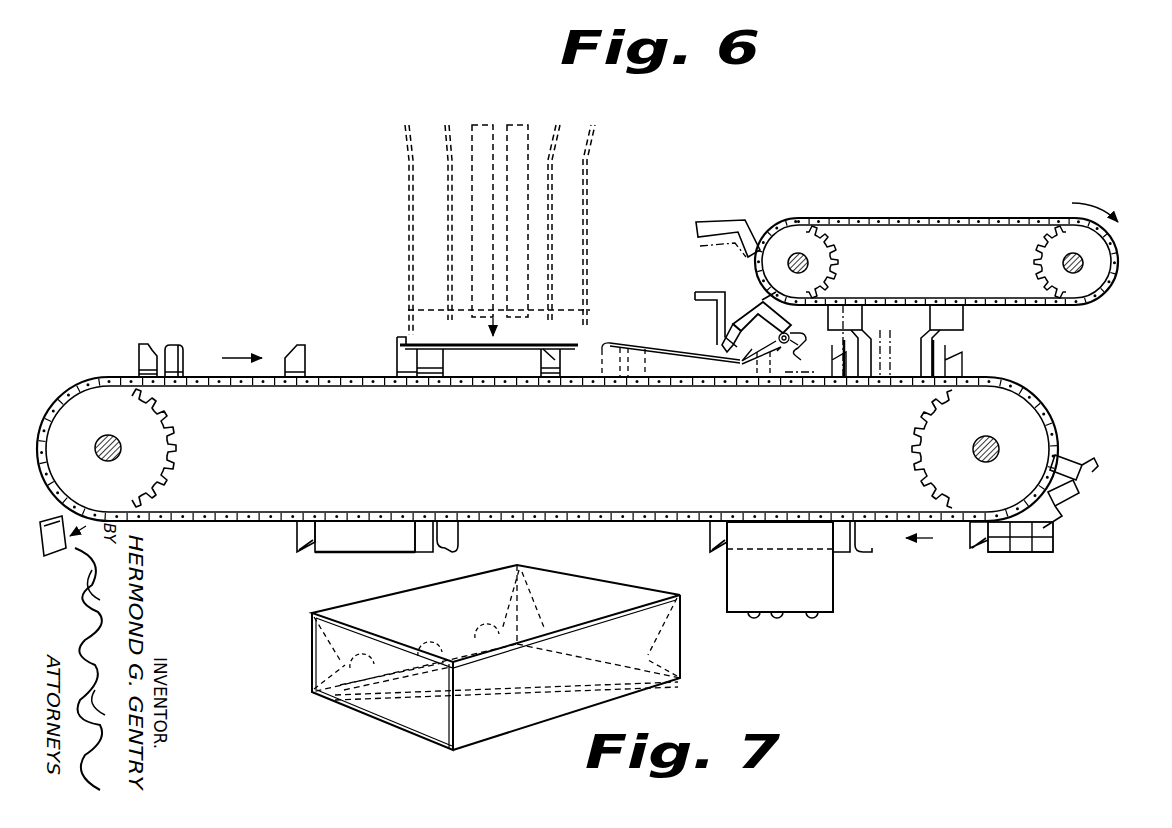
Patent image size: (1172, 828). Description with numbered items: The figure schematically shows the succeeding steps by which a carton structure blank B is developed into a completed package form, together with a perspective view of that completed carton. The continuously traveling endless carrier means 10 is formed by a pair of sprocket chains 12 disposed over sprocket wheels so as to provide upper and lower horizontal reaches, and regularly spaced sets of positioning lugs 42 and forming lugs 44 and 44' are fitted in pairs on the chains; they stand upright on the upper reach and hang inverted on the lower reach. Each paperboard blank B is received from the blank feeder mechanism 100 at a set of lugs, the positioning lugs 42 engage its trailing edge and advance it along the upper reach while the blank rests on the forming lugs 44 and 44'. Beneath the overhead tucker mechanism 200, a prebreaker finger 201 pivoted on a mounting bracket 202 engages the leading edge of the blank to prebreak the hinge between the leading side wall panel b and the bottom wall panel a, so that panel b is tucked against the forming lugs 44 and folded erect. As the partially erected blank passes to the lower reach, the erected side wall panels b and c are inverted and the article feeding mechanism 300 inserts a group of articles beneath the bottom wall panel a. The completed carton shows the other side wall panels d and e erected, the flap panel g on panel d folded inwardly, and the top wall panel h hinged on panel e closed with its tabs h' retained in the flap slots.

In FIG. 6, the carrier means 10 is at (547, 414).
In FIG. 6, the sprocket chains 12 is at (236, 388).
In FIG. 6, the positioning lugs 42 is at (142, 344).
In FIG. 6, the forming lugs 44' is at (180, 342).
In FIG. 6, the forming lugs 44 is at (300, 342).
In FIG. 6, the blank feeder mechanism 100 is at (406, 207).
In FIG. 6, the carton structure blank B is at (578, 338).
In FIG. 6, the overhead tucker mechanism 200 is at (928, 216).
In FIG. 6, the prebreaker finger 201 is at (771, 326).
In FIG. 6, the mounting bracket 202 is at (778, 359).
In FIG. 6, the article feeding mechanism 300 is at (1062, 536).
In FIG. 7, the bottom wall panel a is at (560, 573).
In FIG. 7, the side wall panel b is at (398, 720).
In FIG. 7, the side wall panel c is at (633, 598).
In FIG. 7, the side wall panel d is at (393, 615).
In FIG. 7, the side wall panel e is at (600, 700).
In FIG. 7, the flap panel g is at (413, 683).
In FIG. 7, the top wall panel h is at (525, 739).
In FIG. 7, the tabs h' is at (416, 627).